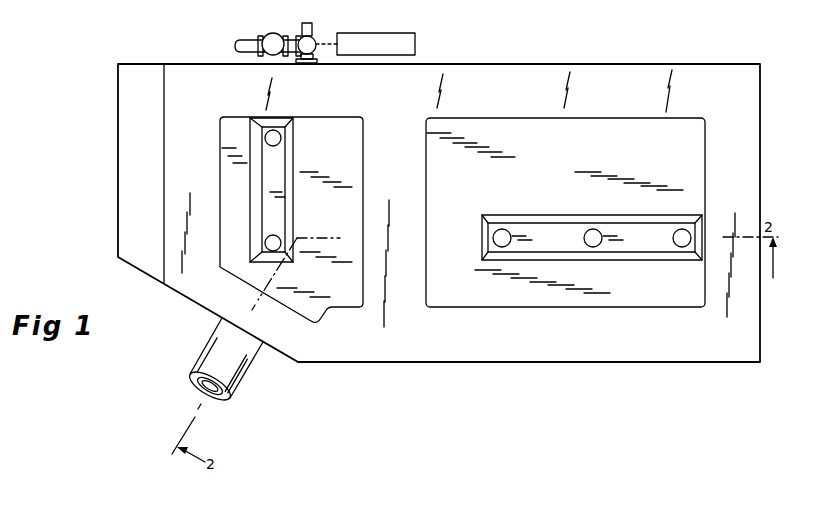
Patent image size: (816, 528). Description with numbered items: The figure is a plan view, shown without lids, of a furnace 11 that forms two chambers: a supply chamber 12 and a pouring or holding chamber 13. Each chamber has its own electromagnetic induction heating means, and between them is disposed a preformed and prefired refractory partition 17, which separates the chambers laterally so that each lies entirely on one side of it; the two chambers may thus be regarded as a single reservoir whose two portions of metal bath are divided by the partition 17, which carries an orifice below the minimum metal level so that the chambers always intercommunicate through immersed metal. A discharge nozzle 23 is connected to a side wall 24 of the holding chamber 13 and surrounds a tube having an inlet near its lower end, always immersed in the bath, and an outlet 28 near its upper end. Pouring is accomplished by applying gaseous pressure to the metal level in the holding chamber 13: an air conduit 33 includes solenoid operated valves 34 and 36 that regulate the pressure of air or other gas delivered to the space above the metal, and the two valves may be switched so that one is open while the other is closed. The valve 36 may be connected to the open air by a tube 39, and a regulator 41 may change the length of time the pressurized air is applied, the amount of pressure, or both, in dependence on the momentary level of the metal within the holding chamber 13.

The furnace 11 is at (637, 368).
The supply chamber 12 is at (485, 143).
The pouring or holding chamber 13 is at (348, 167).
The refractory partition 17 is at (408, 198).
The discharge nozzle 23 is at (277, 390).
The side wall 24 is at (210, 290).
The outlet 28 is at (208, 402).
The air conduit 33 is at (238, 56).
The solenoid operated valve 34 is at (273, 33).
The solenoid operated valve 36 is at (314, 41).
The tube 39 is at (247, 37).
The regulator 41 is at (416, 44).